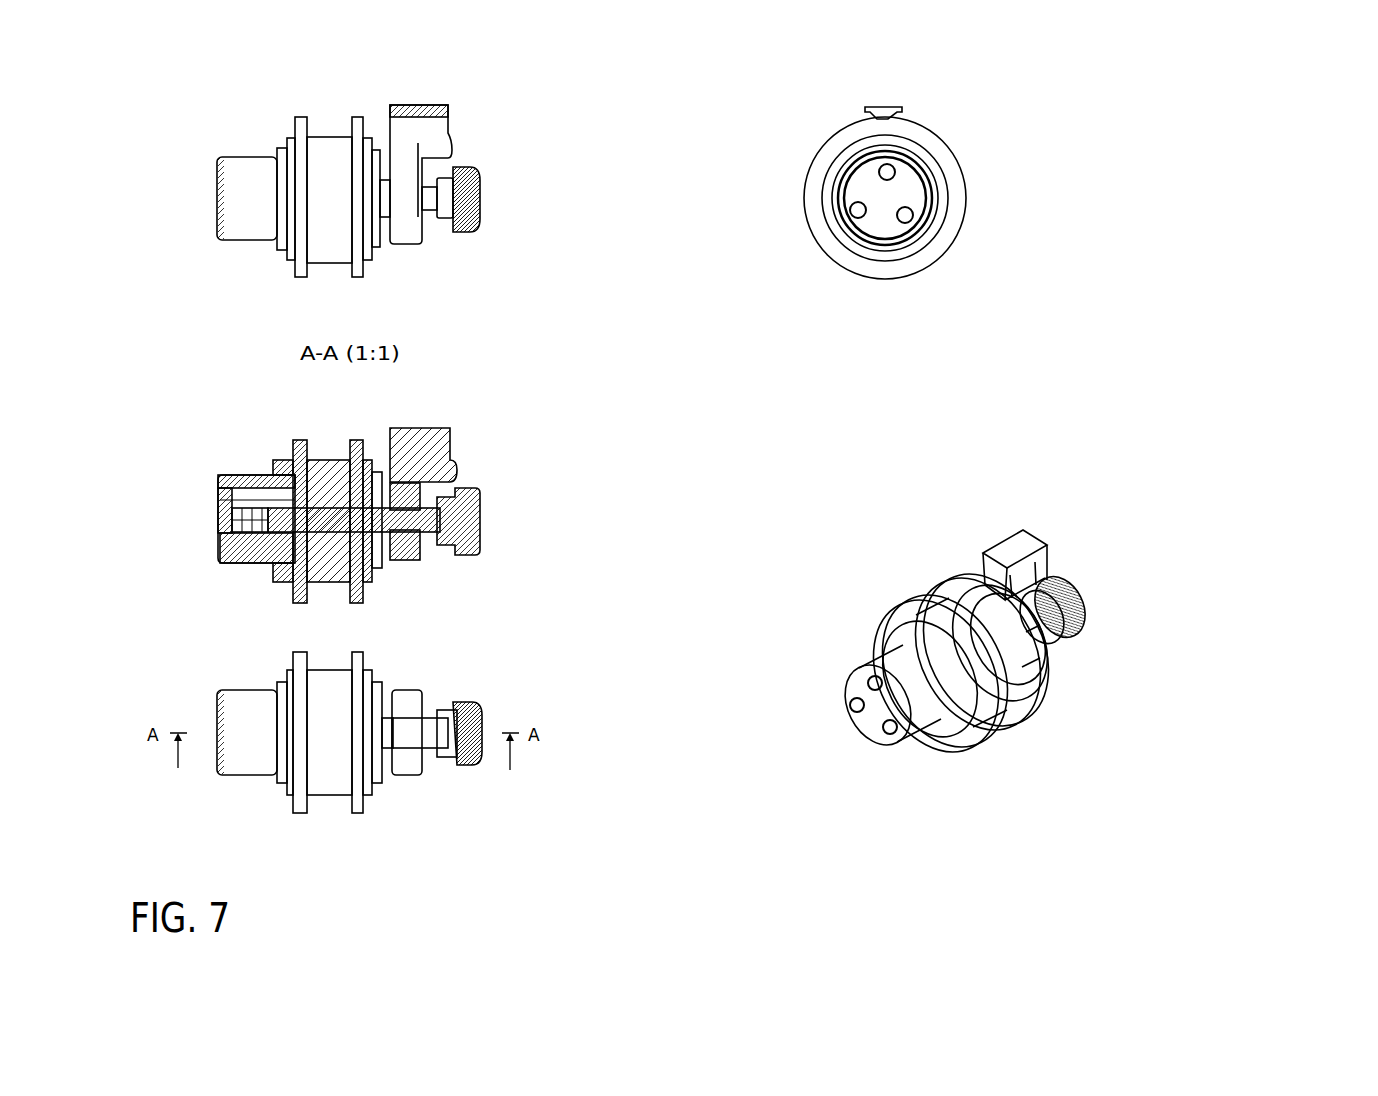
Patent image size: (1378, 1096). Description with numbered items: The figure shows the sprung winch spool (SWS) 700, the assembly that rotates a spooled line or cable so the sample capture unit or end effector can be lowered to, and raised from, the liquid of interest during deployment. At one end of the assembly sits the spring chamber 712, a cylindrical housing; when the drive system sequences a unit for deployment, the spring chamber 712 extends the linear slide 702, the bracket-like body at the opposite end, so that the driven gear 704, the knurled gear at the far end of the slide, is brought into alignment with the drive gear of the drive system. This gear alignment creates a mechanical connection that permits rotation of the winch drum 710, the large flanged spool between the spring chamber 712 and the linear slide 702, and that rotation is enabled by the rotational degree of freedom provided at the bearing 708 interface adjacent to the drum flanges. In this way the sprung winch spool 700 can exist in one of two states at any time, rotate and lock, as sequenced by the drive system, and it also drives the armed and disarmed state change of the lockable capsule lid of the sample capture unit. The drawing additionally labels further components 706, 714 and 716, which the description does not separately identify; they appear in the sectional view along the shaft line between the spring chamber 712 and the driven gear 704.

The sprung winch spool (SWS) 700 is at (1365, 931).
The linear slide 702 is at (420, 105).
The driven gear 704 is at (480, 190).
The shaft 706 is at (432, 212).
The bearing 708 is at (285, 145).
The winch drum 710 is at (360, 272).
The spring chamber 712 is at (213, 177).
The collar 714 is at (437, 493).
The housing wall / cover 716 is at (238, 476).